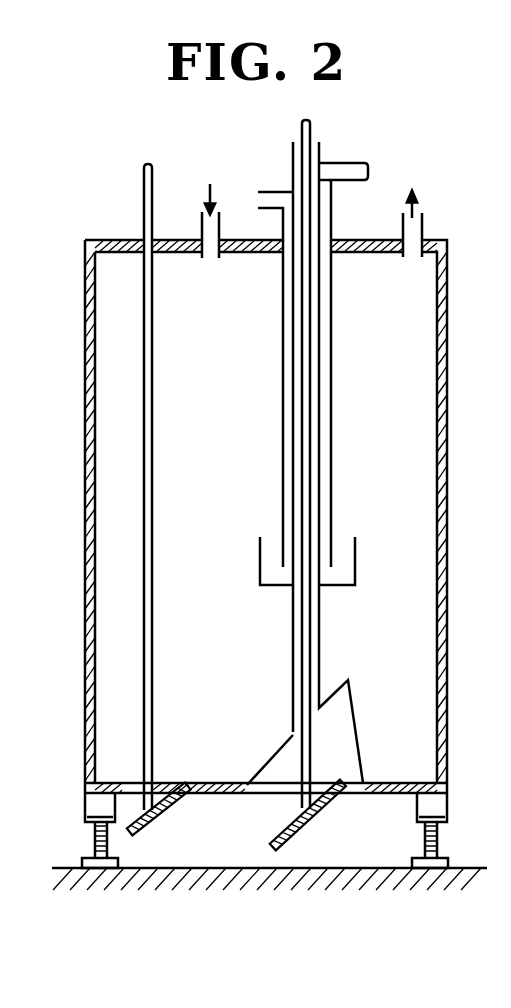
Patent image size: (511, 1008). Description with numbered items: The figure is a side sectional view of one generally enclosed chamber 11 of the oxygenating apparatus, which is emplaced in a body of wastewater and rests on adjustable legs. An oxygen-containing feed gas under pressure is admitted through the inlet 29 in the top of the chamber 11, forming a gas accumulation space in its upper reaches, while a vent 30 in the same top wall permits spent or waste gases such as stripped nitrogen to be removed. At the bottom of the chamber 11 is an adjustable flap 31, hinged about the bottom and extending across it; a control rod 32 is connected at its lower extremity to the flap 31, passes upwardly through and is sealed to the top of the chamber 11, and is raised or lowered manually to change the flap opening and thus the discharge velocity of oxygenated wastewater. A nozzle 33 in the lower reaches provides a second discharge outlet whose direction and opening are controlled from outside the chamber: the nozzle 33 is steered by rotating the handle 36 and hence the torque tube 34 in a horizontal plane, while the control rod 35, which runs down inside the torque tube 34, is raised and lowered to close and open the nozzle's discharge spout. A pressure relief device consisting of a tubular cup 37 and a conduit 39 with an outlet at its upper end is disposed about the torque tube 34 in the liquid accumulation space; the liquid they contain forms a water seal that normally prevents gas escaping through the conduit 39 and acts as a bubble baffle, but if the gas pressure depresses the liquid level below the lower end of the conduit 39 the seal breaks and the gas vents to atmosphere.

The chamber 11 is at (447, 507).
The inlet 29 is at (212, 259).
The vent 30 is at (427, 216).
The adjustable flap 31 is at (148, 823).
The control rod 32 is at (144, 212).
The nozzle 33 is at (274, 752).
The torque tube 34 is at (322, 636).
The control rod 35 is at (312, 124).
The handle 36 is at (346, 162).
The tubular cup 37 is at (357, 563).
The conduit 39 is at (256, 192).